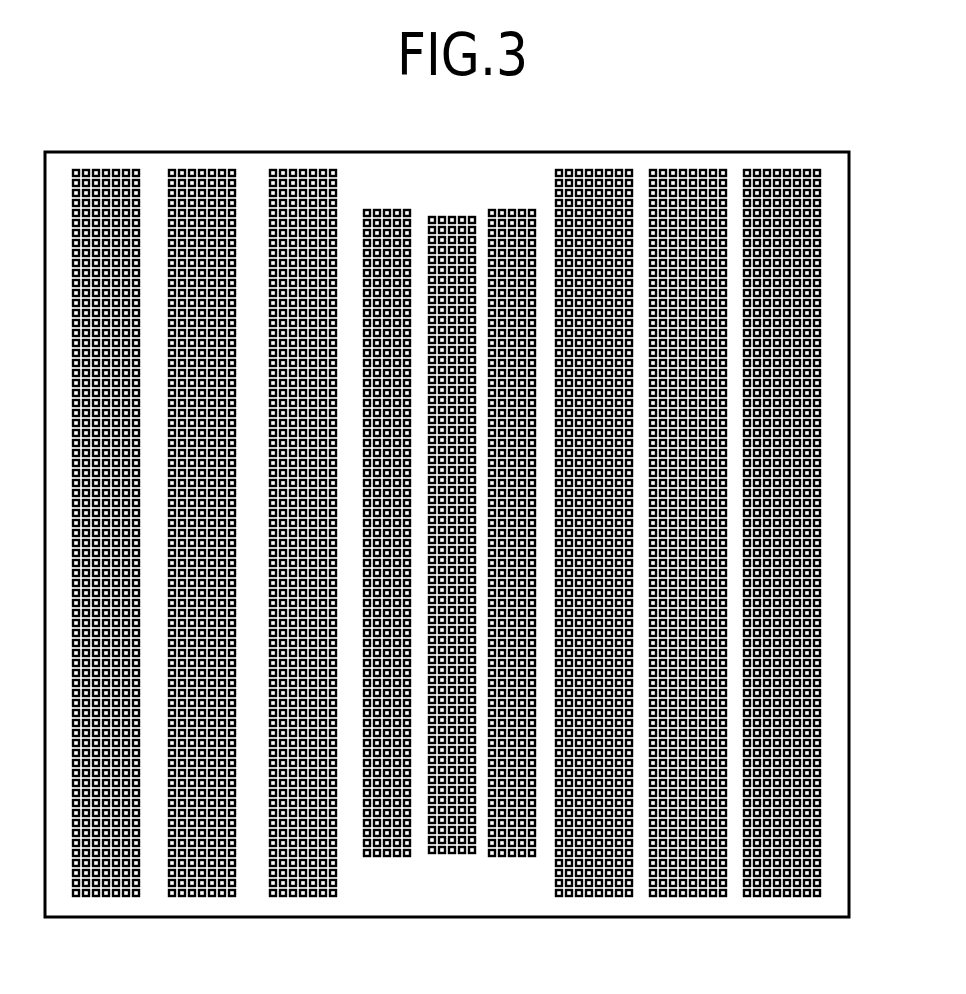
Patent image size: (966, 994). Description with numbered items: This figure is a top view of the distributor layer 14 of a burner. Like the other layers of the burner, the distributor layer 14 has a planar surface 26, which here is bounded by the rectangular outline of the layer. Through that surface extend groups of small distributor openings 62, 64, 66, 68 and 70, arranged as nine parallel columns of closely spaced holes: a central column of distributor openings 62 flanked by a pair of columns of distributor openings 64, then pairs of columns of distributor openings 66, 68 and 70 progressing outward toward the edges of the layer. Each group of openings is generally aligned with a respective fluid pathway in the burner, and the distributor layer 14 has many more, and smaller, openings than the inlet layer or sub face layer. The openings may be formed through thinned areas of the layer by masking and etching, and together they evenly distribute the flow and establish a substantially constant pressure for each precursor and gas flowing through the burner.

The distributor layer 14 is at (849, 190).
The planar surface 26 is at (432, 900).
The distributor openings 62 is at (474, 216).
The distributor openings 64 is at (410, 208).
The distributor openings 66 is at (336, 168).
The distributor openings 68 is at (170, 168).
The distributor openings 70 is at (139, 168).